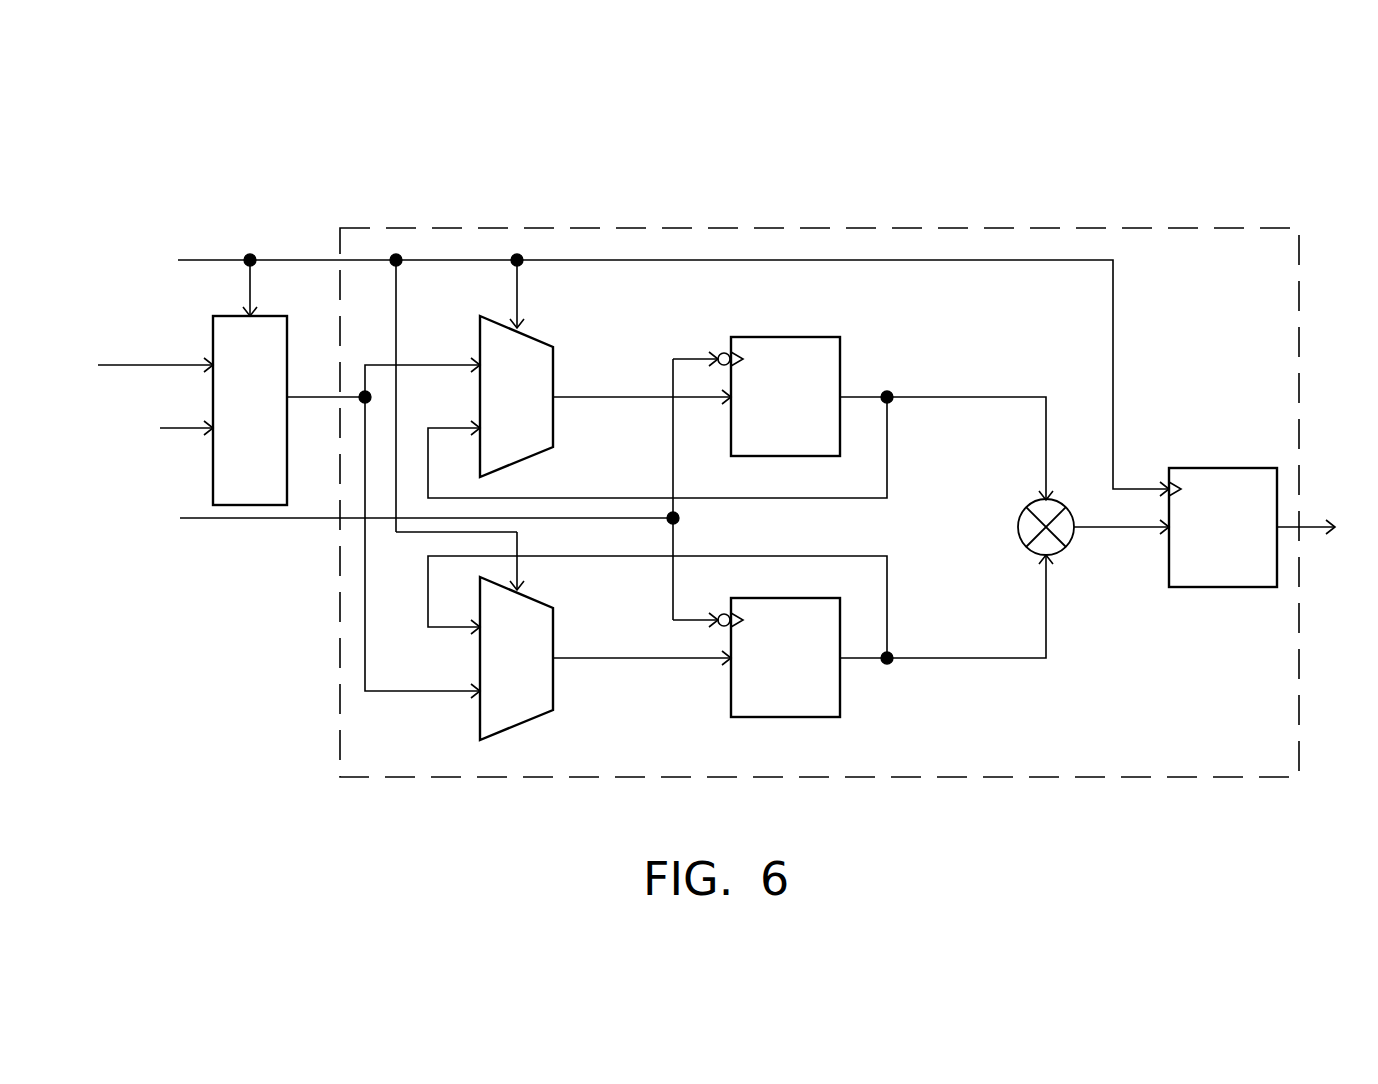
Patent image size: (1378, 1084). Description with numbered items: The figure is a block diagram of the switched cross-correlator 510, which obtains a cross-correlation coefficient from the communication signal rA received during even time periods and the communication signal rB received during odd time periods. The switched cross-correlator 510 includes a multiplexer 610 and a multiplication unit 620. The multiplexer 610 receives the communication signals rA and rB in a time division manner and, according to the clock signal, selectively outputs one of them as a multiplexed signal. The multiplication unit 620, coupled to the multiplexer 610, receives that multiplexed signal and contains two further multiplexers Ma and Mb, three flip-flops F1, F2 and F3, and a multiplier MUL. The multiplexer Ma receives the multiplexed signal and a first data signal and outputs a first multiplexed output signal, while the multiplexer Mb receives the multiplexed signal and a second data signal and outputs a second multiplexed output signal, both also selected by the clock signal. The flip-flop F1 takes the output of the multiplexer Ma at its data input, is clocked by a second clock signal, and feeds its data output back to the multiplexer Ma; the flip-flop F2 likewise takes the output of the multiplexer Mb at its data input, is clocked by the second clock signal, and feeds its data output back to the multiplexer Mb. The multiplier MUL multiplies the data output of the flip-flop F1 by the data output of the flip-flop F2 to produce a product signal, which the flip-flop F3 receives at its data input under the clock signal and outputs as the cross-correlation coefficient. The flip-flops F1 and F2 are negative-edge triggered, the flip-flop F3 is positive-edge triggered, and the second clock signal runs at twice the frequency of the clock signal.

The switched cross-correlator 510 is at (1279, 150).
The multiplexer 610 is at (268, 316).
The multiplication unit 620 is at (625, 228).
The flip-flop F1 is at (840, 371).
The flip-flop F2 is at (840, 690).
The flip-flop F3 is at (1197, 468).
The multiplexer Ma is at (553, 449).
The multiplexer Mb is at (553, 712).
The multiplier MUL is at (1024, 537).